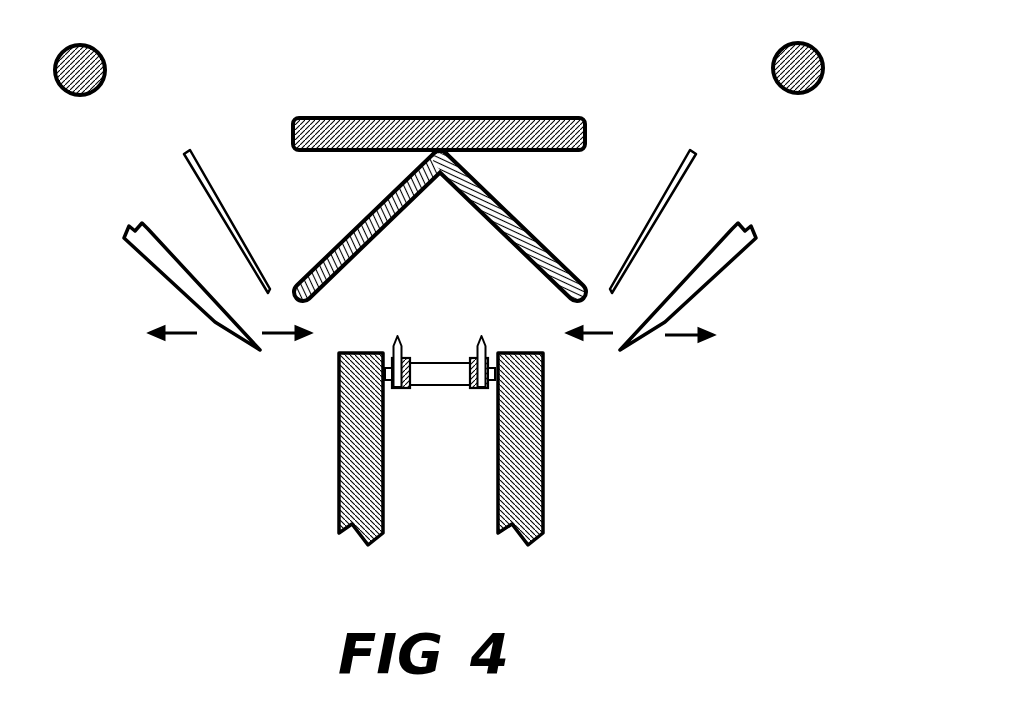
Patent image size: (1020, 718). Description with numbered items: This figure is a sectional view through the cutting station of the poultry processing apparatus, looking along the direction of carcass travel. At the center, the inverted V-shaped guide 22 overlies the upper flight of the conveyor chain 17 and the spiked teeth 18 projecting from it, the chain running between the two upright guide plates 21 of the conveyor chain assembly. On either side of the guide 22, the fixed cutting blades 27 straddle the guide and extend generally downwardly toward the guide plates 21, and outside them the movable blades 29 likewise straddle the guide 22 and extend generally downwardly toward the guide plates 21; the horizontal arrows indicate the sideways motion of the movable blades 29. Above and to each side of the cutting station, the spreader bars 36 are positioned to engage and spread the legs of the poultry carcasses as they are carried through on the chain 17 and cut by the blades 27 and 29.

The conveyor chain 17 is at (505, 338).
The spiked teeth 18 is at (397, 334).
The guide plates 21 is at (338, 435).
The inverted V-shaped guide 22 is at (493, 197).
The fixed cutting blades 27 is at (193, 162).
The movable blades 29 is at (147, 231).
The spreader bars 36 is at (84, 46).